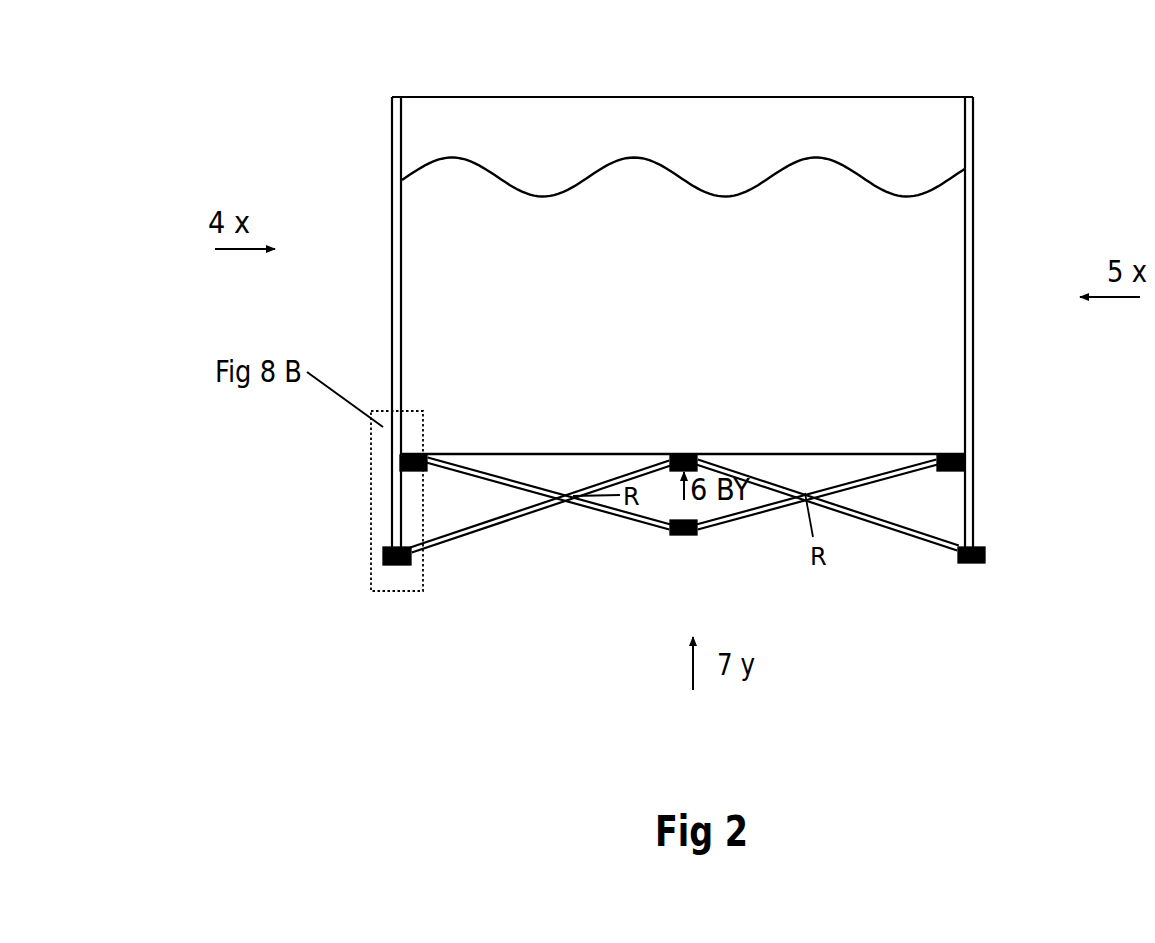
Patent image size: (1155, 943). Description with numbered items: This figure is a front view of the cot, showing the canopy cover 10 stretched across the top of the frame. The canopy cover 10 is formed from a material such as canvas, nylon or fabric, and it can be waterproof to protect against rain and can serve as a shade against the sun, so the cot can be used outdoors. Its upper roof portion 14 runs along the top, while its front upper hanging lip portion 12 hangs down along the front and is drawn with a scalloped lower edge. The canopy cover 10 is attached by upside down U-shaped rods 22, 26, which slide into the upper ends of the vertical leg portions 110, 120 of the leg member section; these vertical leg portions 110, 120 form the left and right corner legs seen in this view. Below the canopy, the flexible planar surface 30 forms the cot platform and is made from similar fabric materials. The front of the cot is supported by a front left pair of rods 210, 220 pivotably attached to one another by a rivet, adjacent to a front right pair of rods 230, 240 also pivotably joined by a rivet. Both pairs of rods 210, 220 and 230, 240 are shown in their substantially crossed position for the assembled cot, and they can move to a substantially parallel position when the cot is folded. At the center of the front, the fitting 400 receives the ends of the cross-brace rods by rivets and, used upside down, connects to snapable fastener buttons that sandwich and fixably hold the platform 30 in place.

The canopy cover 10 is at (723, 138).
The front upper hanging lip portion 12 is at (938, 132).
The upper roof portion 14 is at (517, 97).
The upside down U-shaped rod 22 is at (973, 227).
The upside down U-shaped rod 26 is at (401, 287).
The flexible planar surface 30 is at (560, 454).
The vertical leg portion 110 is at (973, 482).
The vertical leg portion 120 is at (392, 473).
The front left rod 210 is at (531, 506).
The front left rod 220 is at (478, 473).
The front right rod 230 is at (868, 480).
The front right rod 240 is at (755, 469).
The fitting 400 is at (707, 455).